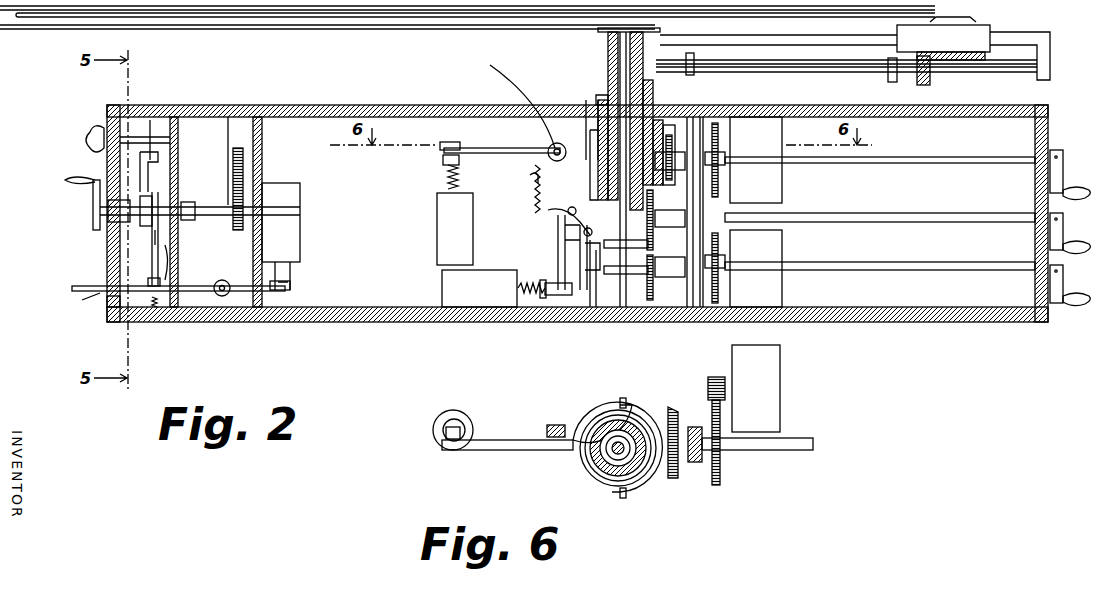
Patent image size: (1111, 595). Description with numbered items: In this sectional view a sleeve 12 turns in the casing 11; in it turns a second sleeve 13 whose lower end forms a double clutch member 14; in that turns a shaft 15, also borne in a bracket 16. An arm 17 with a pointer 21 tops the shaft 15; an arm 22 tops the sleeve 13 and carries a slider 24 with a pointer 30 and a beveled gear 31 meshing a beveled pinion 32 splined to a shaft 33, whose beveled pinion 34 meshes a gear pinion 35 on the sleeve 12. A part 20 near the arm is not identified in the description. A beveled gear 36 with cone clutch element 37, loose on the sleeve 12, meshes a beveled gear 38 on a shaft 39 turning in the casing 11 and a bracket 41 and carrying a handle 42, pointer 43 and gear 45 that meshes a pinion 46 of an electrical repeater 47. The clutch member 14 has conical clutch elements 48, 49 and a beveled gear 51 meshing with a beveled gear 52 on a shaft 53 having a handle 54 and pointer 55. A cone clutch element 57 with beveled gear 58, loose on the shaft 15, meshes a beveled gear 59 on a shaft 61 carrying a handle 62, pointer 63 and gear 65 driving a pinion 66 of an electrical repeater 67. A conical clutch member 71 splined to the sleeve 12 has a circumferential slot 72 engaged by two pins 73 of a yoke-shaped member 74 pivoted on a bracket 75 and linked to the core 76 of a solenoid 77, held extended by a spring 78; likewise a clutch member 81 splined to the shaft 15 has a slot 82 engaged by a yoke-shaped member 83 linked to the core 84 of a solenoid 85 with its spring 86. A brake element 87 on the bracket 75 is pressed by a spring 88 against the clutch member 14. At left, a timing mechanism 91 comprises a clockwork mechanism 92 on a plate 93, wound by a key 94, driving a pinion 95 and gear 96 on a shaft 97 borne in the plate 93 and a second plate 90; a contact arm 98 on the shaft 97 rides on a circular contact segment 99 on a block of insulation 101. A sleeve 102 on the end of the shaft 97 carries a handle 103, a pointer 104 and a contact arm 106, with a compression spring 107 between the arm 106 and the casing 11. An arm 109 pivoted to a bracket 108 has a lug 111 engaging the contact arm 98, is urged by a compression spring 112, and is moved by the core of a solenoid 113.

In FIG. 2, the casing 11 is at (330, 320).
In FIG. 2, the sleeve 12 is at (596, 106).
In FIG. 6, the sleeve 12 is at (640, 470).
In FIG. 2, the second sleeve 13 is at (630, 68).
In FIG. 6, the second sleeve 13 is at (635, 432).
In FIG. 2, the double clutch member 14 is at (672, 165).
In FIG. 2, the shaft 15 is at (608, 55).
In FIG. 6, the shaft 15 is at (630, 420).
In FIG. 2, the bracket 16 is at (616, 250).
In FIG. 2, the arm 17 is at (486, 26).
In FIG. 2, the rod 20 is at (682, 14).
In FIG. 2, the pointer 21 is at (666, 27).
In FIG. 2, the arm 22 is at (790, 30).
In FIG. 2, the slider 24 is at (1000, 25).
In FIG. 2, the pointer 30 is at (975, 20).
In FIG. 2, the beveled gear 31 is at (982, 60).
In FIG. 2, the beveled pinion 32 is at (930, 80).
In FIG. 2, the shaft 33 is at (840, 75).
In FIG. 2, the beveled pinion 34 is at (700, 72).
In FIG. 2, the gear pinion 35 is at (594, 98).
In FIG. 2, the beveled gear 36 is at (670, 135).
In FIG. 2, the cone clutch element 37 is at (521, 99).
In FIG. 2, the second beveled gear 38 is at (690, 115).
In FIG. 6, the second beveled gear 38 is at (674, 480).
In FIG. 2, the shaft 39 is at (888, 156).
In FIG. 6, the shaft 39 is at (795, 455).
In FIG. 2, the bracket 41 is at (690, 318).
In FIG. 6, the bracket 41 is at (694, 425).
In FIG. 2, the handle 42 is at (1070, 190).
In FIG. 2, the pointer 43 is at (1058, 150).
In FIG. 2, the gear 45 is at (722, 117).
In FIG. 6, the gear 45 is at (722, 485).
In FIG. 2, the pinion 46 is at (725, 168).
In FIG. 6, the pinion 46 is at (706, 378).
In FIG. 2, the electrical repeater 47 is at (782, 188).
In FIG. 6, the electrical repeater 47 is at (780, 355).
In FIG. 2, the conical clutch element 48 is at (528, 176).
In FIG. 2, the conical clutch element 49 is at (668, 180).
In FIG. 2, the beveled gear 51 is at (660, 190).
In FIG. 2, the second beveled gear 52 is at (654, 240).
In FIG. 2, the shaft 53 is at (892, 213).
In FIG. 2, the handle 54 is at (1065, 236).
In FIG. 2, the pointer 55 is at (1066, 206).
In FIG. 2, the cone clutch element 57 is at (591, 300).
In FIG. 2, the beveled gear 58 is at (598, 300).
In FIG. 2, the second beveled gear 59 is at (653, 290).
In FIG. 2, the shaft 61 is at (893, 272).
In FIG. 2, the handle 62 is at (1070, 305).
In FIG. 2, the pointer 63 is at (1066, 258).
In FIG. 2, the gear 65 is at (706, 318).
In FIG. 2, the pinion 66 is at (725, 270).
In FIG. 2, the electrical repeater 67 is at (782, 290).
In FIG. 2, the double-faced conical clutch member 71 is at (586, 140).
In FIG. 6, the double-faced conical clutch member 71 is at (636, 480).
In FIG. 6, the circumferential slot 72 is at (655, 475).
In FIG. 6, the pins 73 is at (628, 400).
In FIG. 2, the yoke-shaped member 74 is at (448, 140).
In FIG. 6, the yoke-shaped member 74 is at (576, 425).
In FIG. 2, the bracket 75 is at (570, 142).
In FIG. 6, the bracket 75 is at (550, 425).
In FIG. 2, the core 76 is at (447, 140).
In FIG. 6, the core 76 is at (458, 424).
In FIG. 2, the solenoid 77 is at (436, 214).
In FIG. 6, the solenoid 77 is at (443, 425).
In FIG. 2, the spring 78 is at (440, 183).
In FIG. 2, the double-faced conical clutch member 81 is at (598, 252).
In FIG. 2, the circumferential slot 82 is at (578, 248).
In FIG. 2, the yoke-shaped member 83 is at (556, 236).
In FIG. 2, the core 84 is at (563, 297).
In FIG. 2, the solenoid 85 is at (442, 278).
In FIG. 2, the spring 86 is at (530, 300).
In FIG. 2, the brake element 87 is at (545, 214).
In FIG. 2, the spring 88 is at (533, 188).
In FIG. 2, the second plate 90 is at (261, 130).
In FIG. 2, the timing mechanism 91 is at (205, 250).
In FIG. 2, the clockwork mechanism 92 is at (217, 120).
In FIG. 2, the plate 93 is at (176, 135).
In FIG. 2, the key 94 is at (92, 128).
In FIG. 2, the pinion 95 is at (238, 145).
In FIG. 2, the gear 96 is at (260, 300).
In FIG. 2, the shaft 97 is at (190, 290).
In FIG. 2, the contact arm 98 is at (100, 282).
In FIG. 2, the circular contact segment 99 is at (168, 120).
In FIG. 2, the block of insulation 101 is at (210, 125).
In FIG. 2, the sleeve 102 is at (104, 222).
In FIG. 2, the handle 103 is at (92, 205).
In FIG. 2, the pointer 104 is at (100, 250).
In FIG. 2, the contact arm 106 is at (140, 178).
In FIG. 2, the compression spring 107 is at (150, 258).
In FIG. 2, the bracket 108 is at (222, 296).
In FIG. 2, the arm 109 is at (90, 296).
In FIG. 2, the lug 111 is at (110, 312).
In FIG. 2, the compression spring 112 is at (170, 305).
In FIG. 2, the solenoid 113 is at (300, 250).